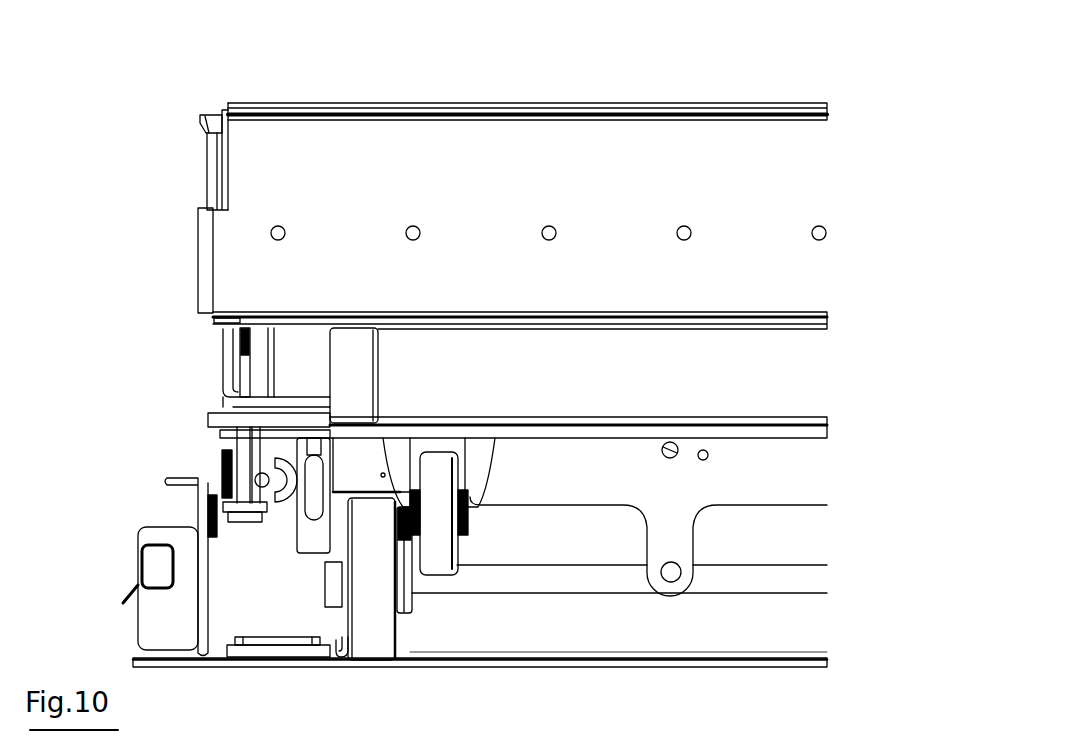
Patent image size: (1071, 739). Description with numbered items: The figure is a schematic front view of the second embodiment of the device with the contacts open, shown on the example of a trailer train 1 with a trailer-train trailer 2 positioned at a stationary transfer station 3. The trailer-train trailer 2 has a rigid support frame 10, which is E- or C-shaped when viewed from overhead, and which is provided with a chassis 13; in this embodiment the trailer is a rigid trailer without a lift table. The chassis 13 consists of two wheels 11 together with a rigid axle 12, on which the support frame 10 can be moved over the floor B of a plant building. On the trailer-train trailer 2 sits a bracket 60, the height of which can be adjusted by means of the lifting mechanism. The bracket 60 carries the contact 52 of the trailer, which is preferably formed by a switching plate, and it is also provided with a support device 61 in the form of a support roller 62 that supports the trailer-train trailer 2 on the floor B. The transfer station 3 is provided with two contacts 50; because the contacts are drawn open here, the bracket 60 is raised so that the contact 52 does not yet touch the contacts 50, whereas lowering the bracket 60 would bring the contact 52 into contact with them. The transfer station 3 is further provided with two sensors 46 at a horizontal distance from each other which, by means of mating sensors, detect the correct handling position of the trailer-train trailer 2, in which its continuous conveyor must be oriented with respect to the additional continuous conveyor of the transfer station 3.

The trailer train 1 is at (444, 379).
The trailer-train trailer 2 is at (444, 399).
The stationary transfer station 3 is at (444, 526).
The support frame 10 is at (585, 142).
The wheel 11 is at (378, 630).
The rigid axle 12 is at (563, 580).
The chassis 13 is at (417, 620).
The sensor 46 is at (150, 565).
The contact 50 is at (267, 637).
The contact 52 is at (247, 523).
The bracket 60 is at (212, 170).
The support device 61 is at (514, 513).
The support roller 62 is at (438, 558).
The floor B is at (681, 632).